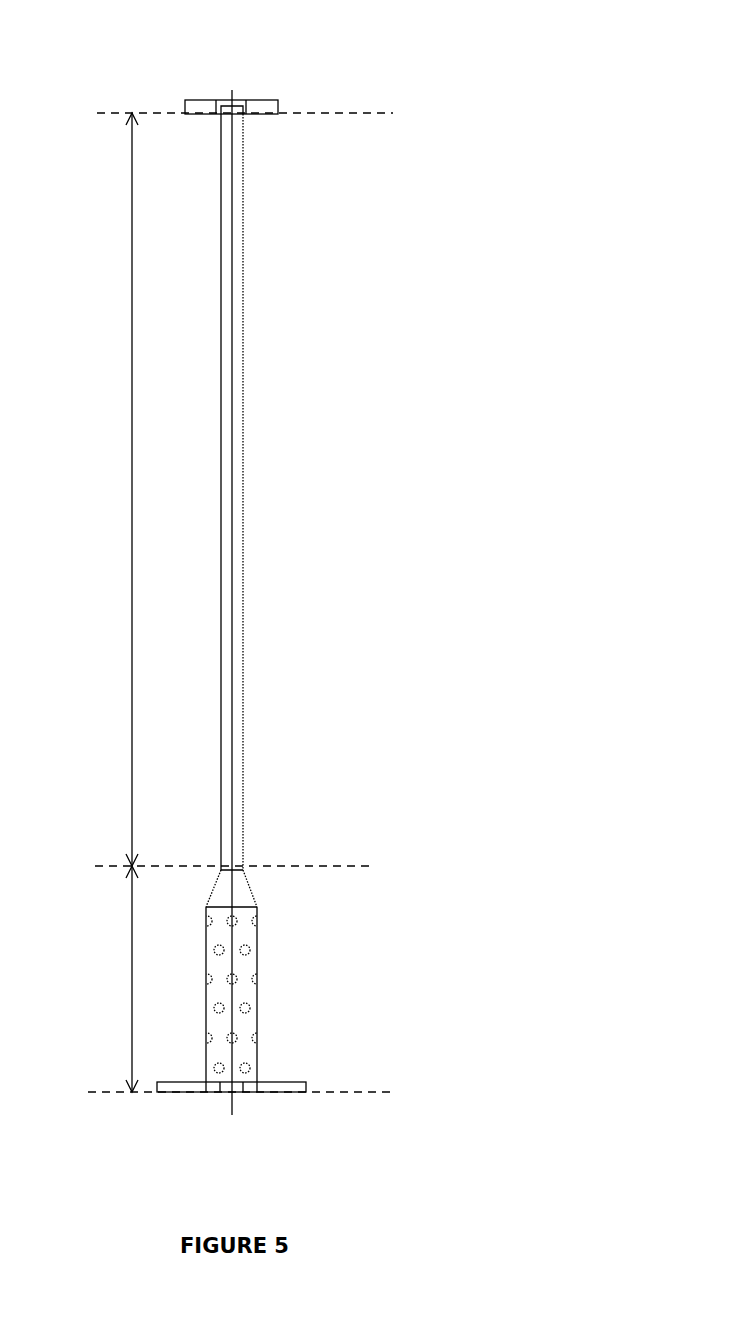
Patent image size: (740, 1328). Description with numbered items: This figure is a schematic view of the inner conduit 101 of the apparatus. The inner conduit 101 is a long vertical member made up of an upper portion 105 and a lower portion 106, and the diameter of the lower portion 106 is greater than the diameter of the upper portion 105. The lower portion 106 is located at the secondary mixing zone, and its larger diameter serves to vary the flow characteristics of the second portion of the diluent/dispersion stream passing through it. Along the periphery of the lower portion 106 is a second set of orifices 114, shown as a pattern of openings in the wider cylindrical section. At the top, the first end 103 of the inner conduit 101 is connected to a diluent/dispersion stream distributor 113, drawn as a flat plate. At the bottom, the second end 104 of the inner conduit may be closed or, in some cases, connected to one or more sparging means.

The inner conduit 101 is at (296, 49).
The first end 103 is at (258, 114).
The second end 104 is at (270, 1092).
The upper portion 105 is at (111, 495).
The lower portion 106 is at (110, 979).
The diluent/dispersion stream distributor 113 is at (190, 106).
The second set of orifices 114 is at (247, 978).